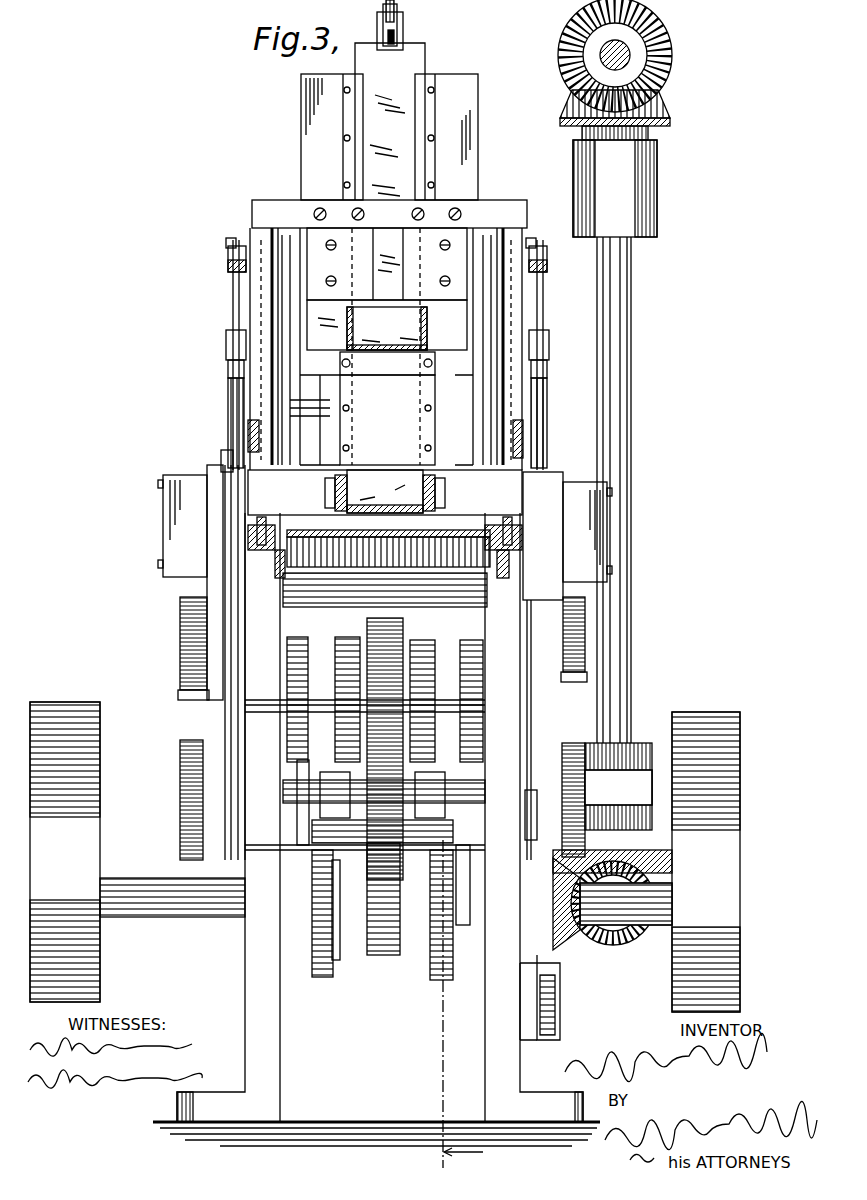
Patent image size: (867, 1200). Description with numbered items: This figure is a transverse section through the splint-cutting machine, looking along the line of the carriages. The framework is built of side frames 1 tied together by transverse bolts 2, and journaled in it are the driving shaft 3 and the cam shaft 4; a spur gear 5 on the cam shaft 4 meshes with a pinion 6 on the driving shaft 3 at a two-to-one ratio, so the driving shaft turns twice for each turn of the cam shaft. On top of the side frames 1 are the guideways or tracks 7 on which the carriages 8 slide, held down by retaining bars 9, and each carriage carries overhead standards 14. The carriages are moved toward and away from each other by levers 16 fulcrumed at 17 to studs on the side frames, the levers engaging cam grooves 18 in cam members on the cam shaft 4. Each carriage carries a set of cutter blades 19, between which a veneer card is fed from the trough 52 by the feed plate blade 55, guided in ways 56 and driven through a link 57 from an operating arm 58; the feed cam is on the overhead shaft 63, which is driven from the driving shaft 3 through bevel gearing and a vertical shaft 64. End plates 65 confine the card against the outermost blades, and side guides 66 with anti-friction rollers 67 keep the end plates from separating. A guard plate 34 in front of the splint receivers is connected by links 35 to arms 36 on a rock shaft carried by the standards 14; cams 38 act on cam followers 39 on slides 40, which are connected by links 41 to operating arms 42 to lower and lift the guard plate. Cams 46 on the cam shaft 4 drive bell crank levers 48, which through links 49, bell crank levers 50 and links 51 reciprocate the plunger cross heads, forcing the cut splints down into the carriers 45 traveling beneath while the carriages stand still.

The side frames 1 is at (376, 829).
The transverse bolts 2 is at (419, 619).
The driving shaft 3 is at (172, 888).
The cam shaft 4 is at (303, 730).
The spur gear 5 is at (403, 628).
The pinion 6 is at (385, 955).
The guideways or tracks 7 is at (260, 525).
The carriages 8 is at (500, 470).
The retaining bars 9 is at (258, 436).
The overhead standards 14 is at (279, 305).
The levers 16 is at (210, 635).
The fulcrum 17 is at (240, 645).
The cam grooves 18 is at (185, 725).
The cutter blades 19 is at (380, 510).
The guard plate 34 is at (340, 408).
The links 35 is at (284, 320).
The arms 36 is at (236, 258).
The cams 38 is at (178, 628).
The cam followers 39 is at (178, 608).
The slides 40 is at (170, 585).
The links 41 is at (238, 275).
The operating arms 42 is at (230, 250).
The carriers 45 is at (390, 545).
The cams 46 is at (462, 690).
The bell crank levers 48 is at (440, 870).
The links 49 is at (445, 950).
The bell crank levers 50 is at (488, 880).
The links 51 is at (222, 460).
The trough 52 is at (358, 330).
The feed plate blade 55 is at (387, 264).
The ways 56 is at (389, 137).
The link 57 is at (398, 34).
The operating arm 58 is at (396, 16).
The overhead shaft 63 is at (630, 58).
The vertical shaft 64 is at (631, 455).
The end plates 65 is at (330, 490).
The side guides 66 is at (388, 507).
The anti-friction rollers 67 is at (338, 500).